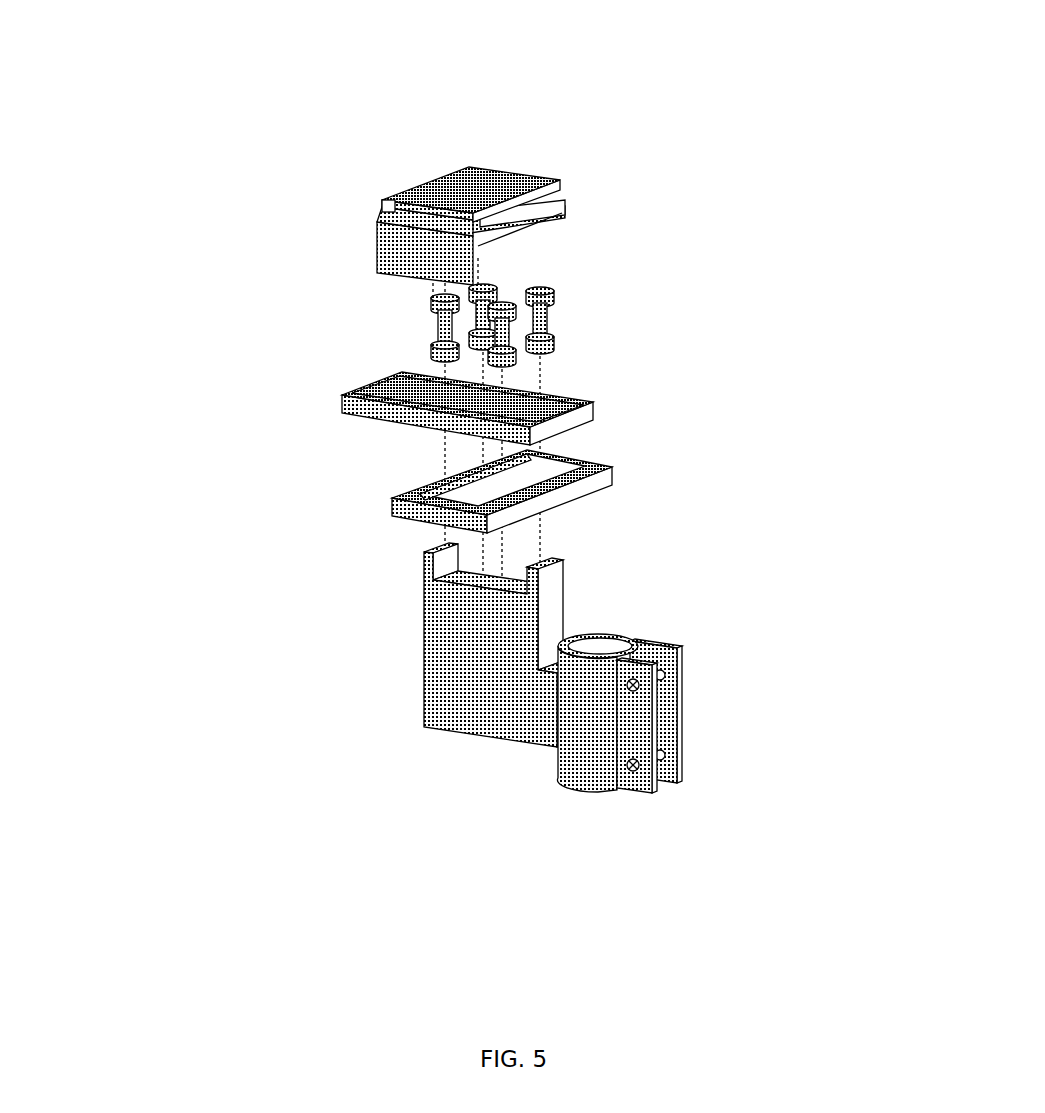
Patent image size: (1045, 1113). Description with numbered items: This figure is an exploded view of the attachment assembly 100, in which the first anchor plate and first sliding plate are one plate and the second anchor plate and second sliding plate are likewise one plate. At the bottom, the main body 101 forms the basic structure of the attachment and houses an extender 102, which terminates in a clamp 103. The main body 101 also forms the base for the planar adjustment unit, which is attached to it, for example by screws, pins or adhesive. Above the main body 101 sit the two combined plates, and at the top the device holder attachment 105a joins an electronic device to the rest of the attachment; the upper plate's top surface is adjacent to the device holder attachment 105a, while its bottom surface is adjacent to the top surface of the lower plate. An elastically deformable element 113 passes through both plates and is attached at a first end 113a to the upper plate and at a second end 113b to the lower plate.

The sensor mounting assembly 100 is at (836, 114).
The device holder attachment 105a is at (471, 154).
The elastically deformable element 113 is at (362, 282).
The first end 113a is at (417, 297).
The second end 113b is at (419, 350).
The main body 101 is at (375, 724).
The extender 102 is at (536, 756).
The clamp 103 is at (665, 798).